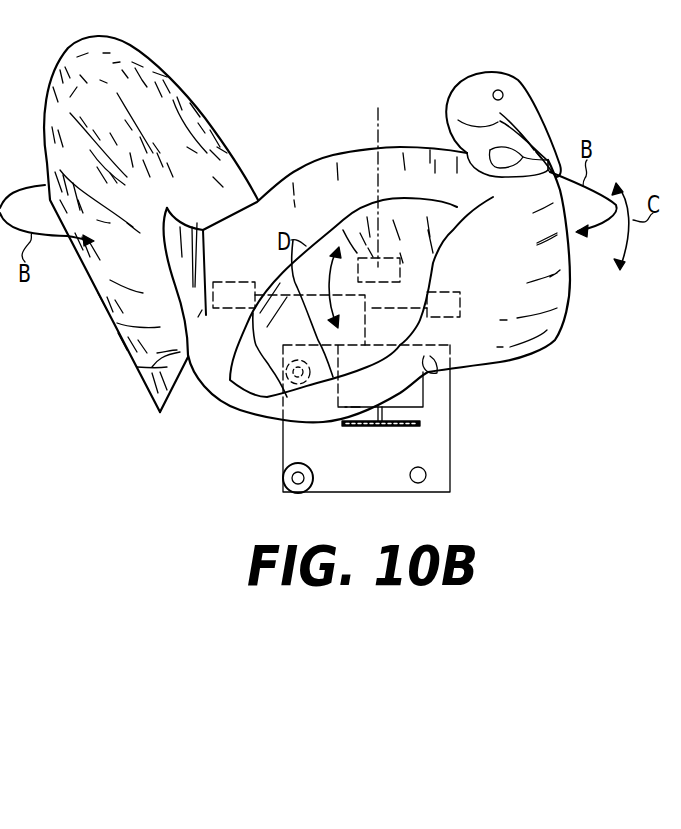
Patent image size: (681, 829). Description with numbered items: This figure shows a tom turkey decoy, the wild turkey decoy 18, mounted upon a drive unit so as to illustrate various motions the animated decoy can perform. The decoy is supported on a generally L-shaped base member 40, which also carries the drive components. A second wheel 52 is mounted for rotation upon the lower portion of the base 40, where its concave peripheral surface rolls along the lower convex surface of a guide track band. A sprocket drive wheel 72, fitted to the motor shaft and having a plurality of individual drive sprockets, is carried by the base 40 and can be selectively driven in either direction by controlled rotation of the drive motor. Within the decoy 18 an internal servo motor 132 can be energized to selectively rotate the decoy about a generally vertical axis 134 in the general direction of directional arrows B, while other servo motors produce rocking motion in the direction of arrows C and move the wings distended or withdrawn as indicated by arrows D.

The wild turkey decoy 18 is at (283, 137).
The internal servo motor 132 is at (357, 255).
The generally vertical axis 134 is at (378, 115).
The base member 40 is at (450, 433).
The sprocket drive wheel 72 is at (380, 427).
The second wheel 52 is at (283, 488).